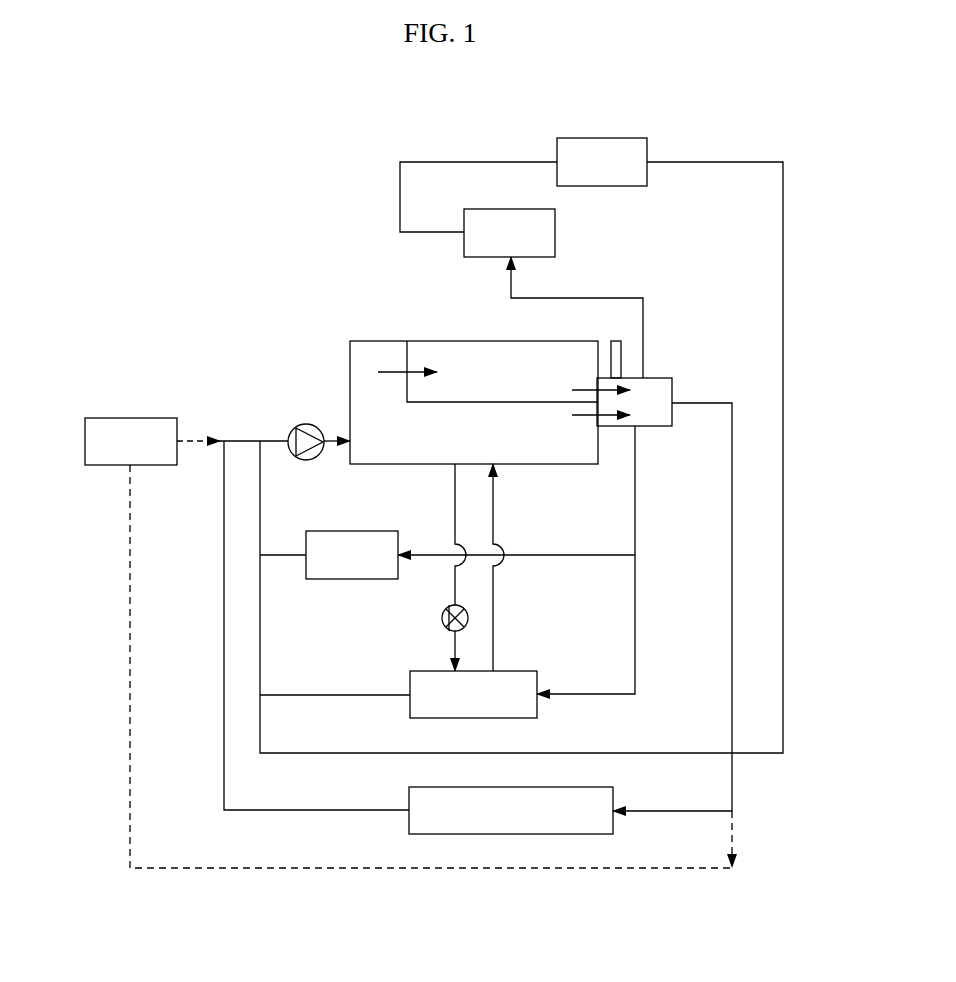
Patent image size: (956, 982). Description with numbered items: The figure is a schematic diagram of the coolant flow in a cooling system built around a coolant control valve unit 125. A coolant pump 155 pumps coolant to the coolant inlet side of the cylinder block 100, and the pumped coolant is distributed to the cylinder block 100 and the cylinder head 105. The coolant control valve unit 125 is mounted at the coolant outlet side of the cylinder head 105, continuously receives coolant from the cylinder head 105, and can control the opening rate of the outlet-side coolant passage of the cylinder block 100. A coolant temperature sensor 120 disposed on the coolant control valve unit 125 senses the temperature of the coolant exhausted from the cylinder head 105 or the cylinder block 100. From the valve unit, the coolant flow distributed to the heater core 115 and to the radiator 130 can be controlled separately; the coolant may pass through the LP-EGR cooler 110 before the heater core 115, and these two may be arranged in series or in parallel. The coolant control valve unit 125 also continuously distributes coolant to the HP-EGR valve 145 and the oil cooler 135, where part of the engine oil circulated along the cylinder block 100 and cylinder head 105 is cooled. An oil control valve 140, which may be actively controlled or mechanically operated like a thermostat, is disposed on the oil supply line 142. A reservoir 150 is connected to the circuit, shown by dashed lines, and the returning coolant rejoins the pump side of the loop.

The cylinder block 100 is at (577, 464).
The cylinder head 105 is at (437, 348).
The low pressure (LP) exhaust gas recirculation (EGR) cooler 110 is at (555, 233).
The heater core 115 is at (602, 138).
The coolant temperature sensor 120 is at (621, 360).
The coolant control valve unit 125 is at (664, 440).
The radiator 130 is at (409, 796).
The oil cooler 135 is at (410, 683).
The oil control valve 140 is at (442, 618).
The oil supply line 142 is at (455, 594).
The high pressure (HP) EGR valve 145 is at (306, 573).
The reservoir 150 is at (130, 418).
The coolant pump 155 is at (304, 424).